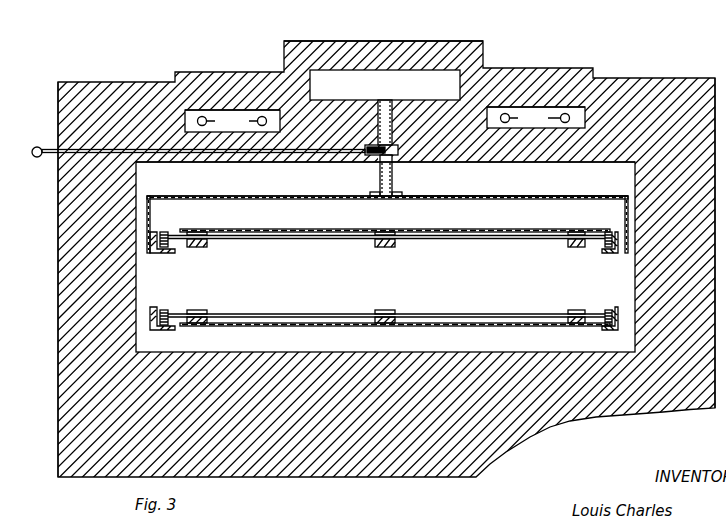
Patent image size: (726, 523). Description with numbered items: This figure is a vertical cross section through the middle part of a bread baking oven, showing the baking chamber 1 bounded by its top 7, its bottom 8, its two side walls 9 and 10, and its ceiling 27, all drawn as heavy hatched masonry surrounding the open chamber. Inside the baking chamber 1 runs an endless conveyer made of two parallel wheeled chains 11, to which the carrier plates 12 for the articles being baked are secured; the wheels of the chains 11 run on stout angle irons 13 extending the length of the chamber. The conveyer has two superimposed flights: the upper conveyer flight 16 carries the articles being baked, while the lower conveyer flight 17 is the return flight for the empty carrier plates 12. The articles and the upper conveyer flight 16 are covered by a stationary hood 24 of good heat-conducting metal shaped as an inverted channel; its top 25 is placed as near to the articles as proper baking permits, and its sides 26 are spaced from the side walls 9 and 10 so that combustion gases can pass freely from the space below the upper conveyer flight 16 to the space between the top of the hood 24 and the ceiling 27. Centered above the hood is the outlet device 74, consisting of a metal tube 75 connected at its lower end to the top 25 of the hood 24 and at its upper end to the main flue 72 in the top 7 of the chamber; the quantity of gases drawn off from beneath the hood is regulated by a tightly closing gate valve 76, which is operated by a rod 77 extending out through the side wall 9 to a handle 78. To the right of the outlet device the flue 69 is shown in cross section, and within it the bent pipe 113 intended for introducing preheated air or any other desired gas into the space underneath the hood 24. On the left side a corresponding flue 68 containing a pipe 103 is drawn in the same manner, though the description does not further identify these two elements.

The baking chamber 1 is at (387, 236).
The top 7 is at (363, 40).
The bottom 8 is at (363, 259).
The side wall 9 is at (79, 279).
The side wall 10 is at (687, 243).
The wheeled chains 11 is at (173, 246).
The plates 12 is at (428, 229).
The angle irons 13 is at (158, 262).
The upper conveyer flight 16 is at (276, 248).
The lower conveyer flight 17 is at (261, 298).
The hood 24 is at (514, 208).
The top of the hood 25 is at (277, 201).
The sides of the hood 26 is at (150, 216).
The ceiling 27 is at (249, 163).
The name plate 68 is at (218, 110).
The flue 69 is at (535, 107).
The main flue 72 is at (385, 85).
The outlet device 74 is at (393, 121).
The metal tube 75 is at (383, 128).
The gate valve 76 is at (366, 148).
The rod 77 is at (48, 156).
The handle 78 is at (35, 146).
The name plate 103 is at (232, 121).
The bent pipe 113 is at (536, 117).